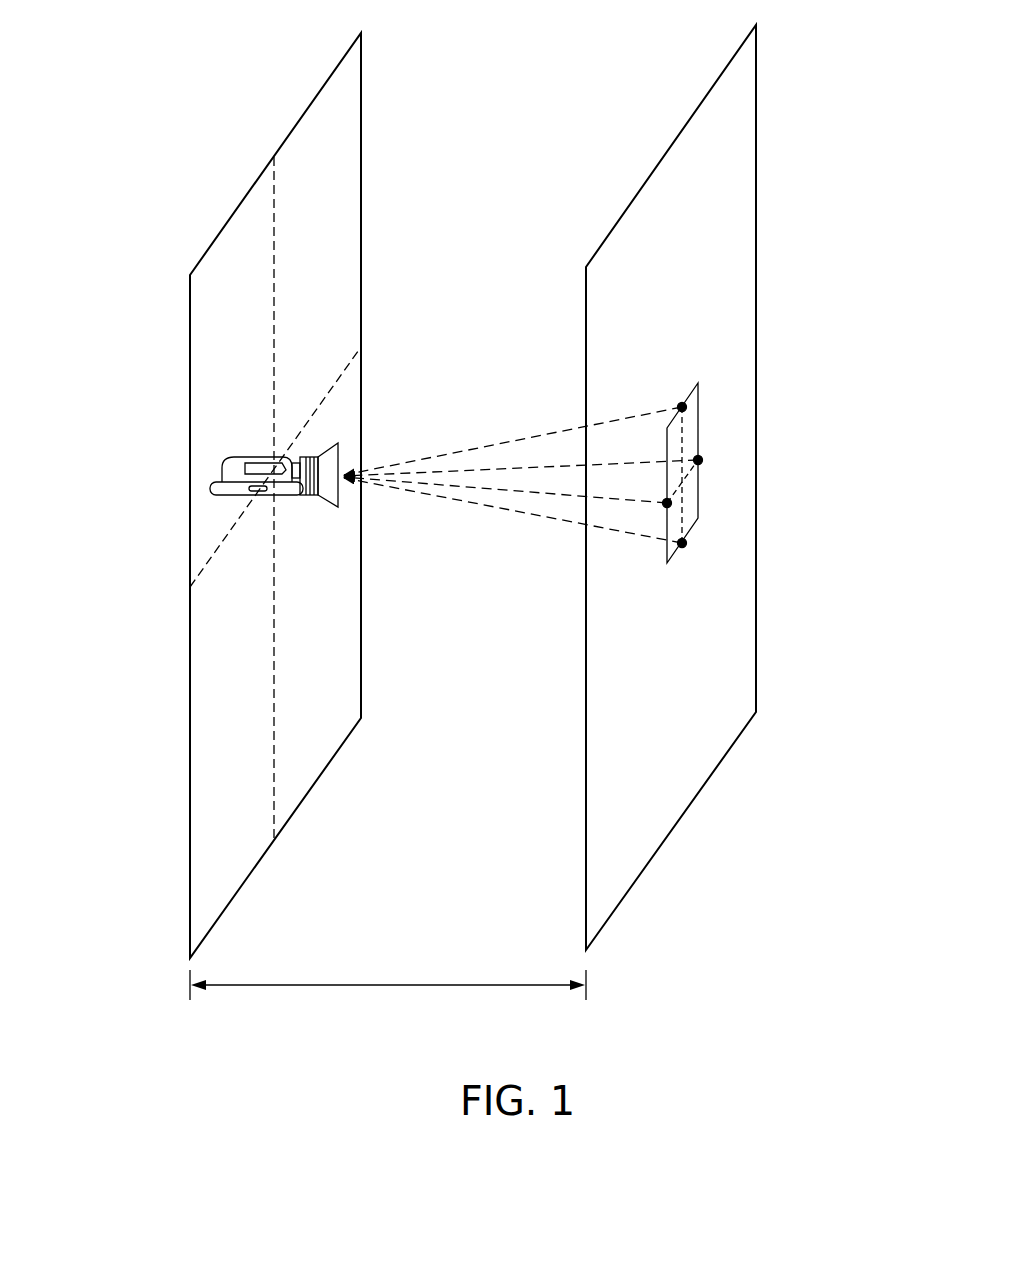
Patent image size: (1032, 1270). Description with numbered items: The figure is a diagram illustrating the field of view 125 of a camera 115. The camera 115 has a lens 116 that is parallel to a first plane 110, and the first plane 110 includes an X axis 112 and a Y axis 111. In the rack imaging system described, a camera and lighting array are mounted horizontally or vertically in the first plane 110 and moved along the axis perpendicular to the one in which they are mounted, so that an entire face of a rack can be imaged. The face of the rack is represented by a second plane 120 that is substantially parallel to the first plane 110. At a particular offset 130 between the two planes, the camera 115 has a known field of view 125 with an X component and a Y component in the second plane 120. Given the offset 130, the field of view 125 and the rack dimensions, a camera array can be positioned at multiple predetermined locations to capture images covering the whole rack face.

The first plane 110 is at (215, 239).
The Y axis 111 is at (273, 181).
The X axis 112 is at (212, 555).
The camera 115 is at (262, 508).
The lens 116 is at (340, 498).
The second plane 120 is at (672, 145).
The field of view 125 is at (703, 476).
The offset 130 is at (428, 974).